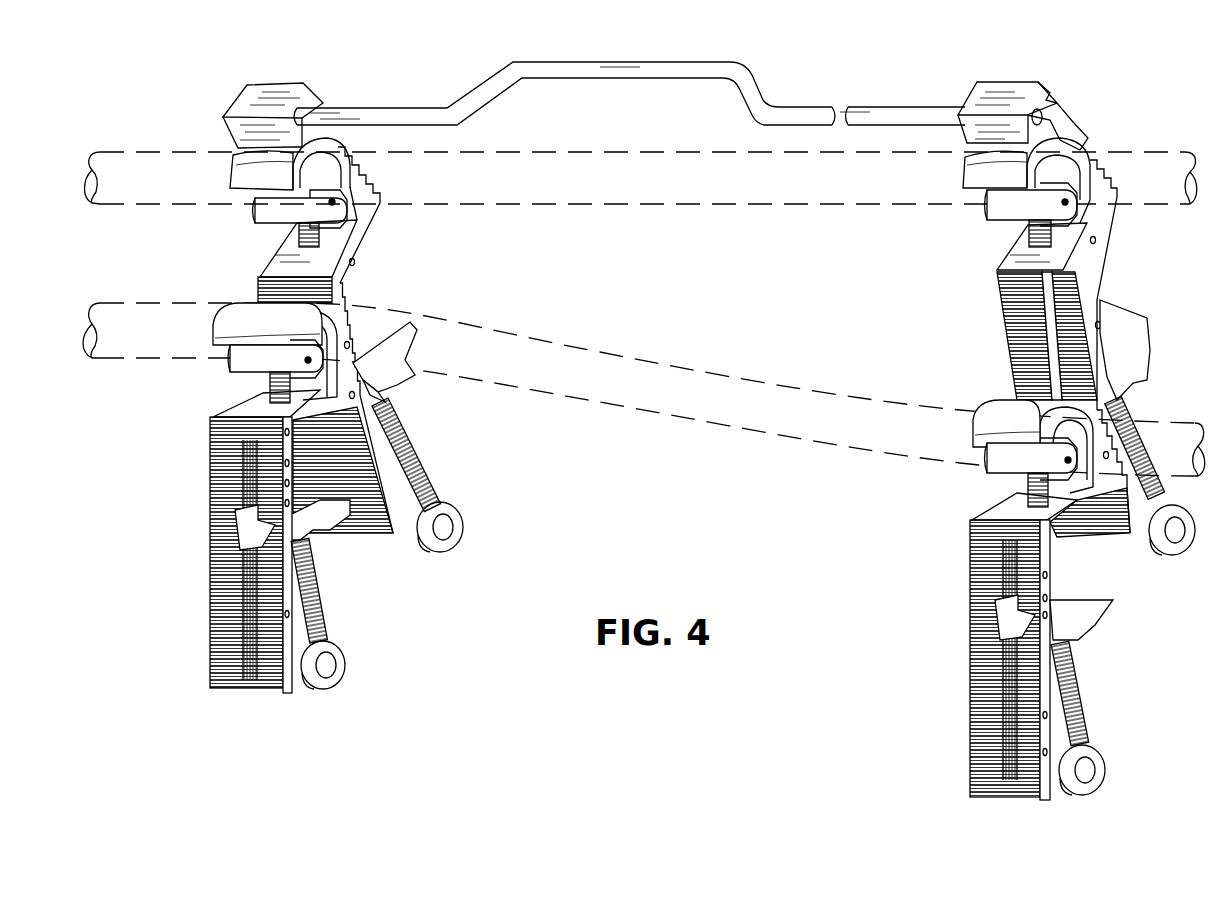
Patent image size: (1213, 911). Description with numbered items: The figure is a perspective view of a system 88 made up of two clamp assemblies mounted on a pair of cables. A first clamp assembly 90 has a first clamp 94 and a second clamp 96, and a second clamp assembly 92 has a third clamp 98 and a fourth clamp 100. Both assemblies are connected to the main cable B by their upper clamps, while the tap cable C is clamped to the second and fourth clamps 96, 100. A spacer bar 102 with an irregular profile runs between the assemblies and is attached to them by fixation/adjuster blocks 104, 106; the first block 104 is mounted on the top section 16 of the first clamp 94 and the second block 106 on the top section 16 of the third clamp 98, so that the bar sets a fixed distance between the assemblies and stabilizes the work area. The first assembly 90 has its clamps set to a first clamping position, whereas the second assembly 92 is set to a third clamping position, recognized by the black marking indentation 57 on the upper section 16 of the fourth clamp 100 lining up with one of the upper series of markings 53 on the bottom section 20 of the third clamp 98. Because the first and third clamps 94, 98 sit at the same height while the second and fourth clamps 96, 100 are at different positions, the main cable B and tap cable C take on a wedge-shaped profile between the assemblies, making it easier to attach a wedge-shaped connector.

The top section 16 is at (247, 168).
The bottom section 20 is at (397, 540).
The marking indentations 53 is at (387, 403).
The indentation 57 is at (395, 423).
The system 88 is at (1134, 140).
The first clamp assembly 90 is at (956, 322).
The second clamp assembly 92 is at (440, 282).
The first clamp 94 is at (1146, 320).
The second clamp 96 is at (1110, 605).
The third clamp 98 is at (407, 383).
The fourth clamp 100 is at (328, 630).
The spacer bar 102 is at (893, 112).
The first block 104 is at (1042, 100).
The second block 106 is at (252, 100).
The main cable B is at (770, 206).
The tap cable C is at (807, 393).